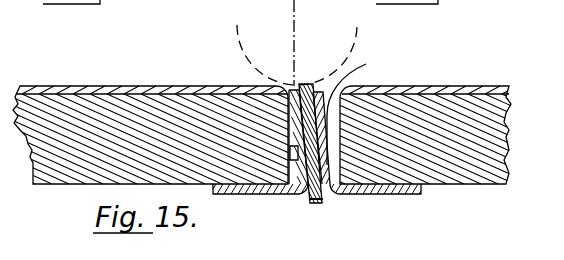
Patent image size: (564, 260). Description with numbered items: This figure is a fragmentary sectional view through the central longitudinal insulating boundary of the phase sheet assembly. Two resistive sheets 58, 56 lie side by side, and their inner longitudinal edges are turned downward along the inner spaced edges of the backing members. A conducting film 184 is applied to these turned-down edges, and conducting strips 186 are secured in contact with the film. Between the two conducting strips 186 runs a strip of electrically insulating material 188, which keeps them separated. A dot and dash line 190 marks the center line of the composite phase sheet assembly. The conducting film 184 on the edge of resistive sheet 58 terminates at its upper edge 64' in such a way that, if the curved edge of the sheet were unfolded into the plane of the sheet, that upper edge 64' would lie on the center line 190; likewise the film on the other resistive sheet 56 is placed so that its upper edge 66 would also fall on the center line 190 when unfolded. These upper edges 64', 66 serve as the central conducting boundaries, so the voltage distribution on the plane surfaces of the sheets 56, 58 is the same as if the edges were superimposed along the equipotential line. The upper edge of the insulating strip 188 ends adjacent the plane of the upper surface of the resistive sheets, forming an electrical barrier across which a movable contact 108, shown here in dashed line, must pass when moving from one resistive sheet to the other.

The resistive sheet 58 is at (141, 86).
The resistive sheet 56 is at (451, 86).
The conducting film 184 is at (292, 150).
The conducting strips 186 is at (296, 200).
The strip of electrically insulating material 188 is at (313, 204).
The upper edge 64' is at (291, 125).
The center line 190 is at (293, 14).
The movable contact 108 is at (243, 45).
The upper edge 66 is at (365, 66).